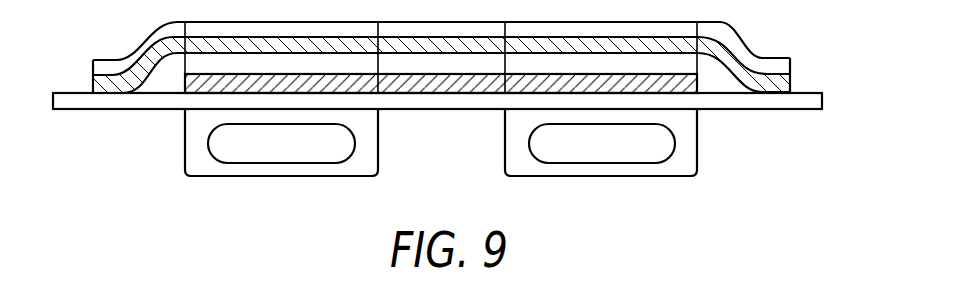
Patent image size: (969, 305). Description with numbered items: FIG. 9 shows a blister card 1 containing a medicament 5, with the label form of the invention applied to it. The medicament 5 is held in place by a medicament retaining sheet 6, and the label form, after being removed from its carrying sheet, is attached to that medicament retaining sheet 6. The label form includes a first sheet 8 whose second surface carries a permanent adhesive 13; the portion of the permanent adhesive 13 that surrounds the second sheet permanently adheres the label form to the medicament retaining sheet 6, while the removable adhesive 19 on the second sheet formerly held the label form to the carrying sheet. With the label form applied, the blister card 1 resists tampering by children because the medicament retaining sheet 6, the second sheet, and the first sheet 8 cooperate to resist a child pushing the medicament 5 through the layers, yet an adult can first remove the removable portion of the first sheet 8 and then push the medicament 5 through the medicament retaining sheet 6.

The blister card 1 is at (738, 133).
The medicament 5 is at (608, 148).
The medicament retaining sheet 6 is at (813, 98).
The first sheet 8 is at (798, 55).
The permanent adhesive 13 is at (92, 83).
The removable adhesive 19 is at (185, 86).